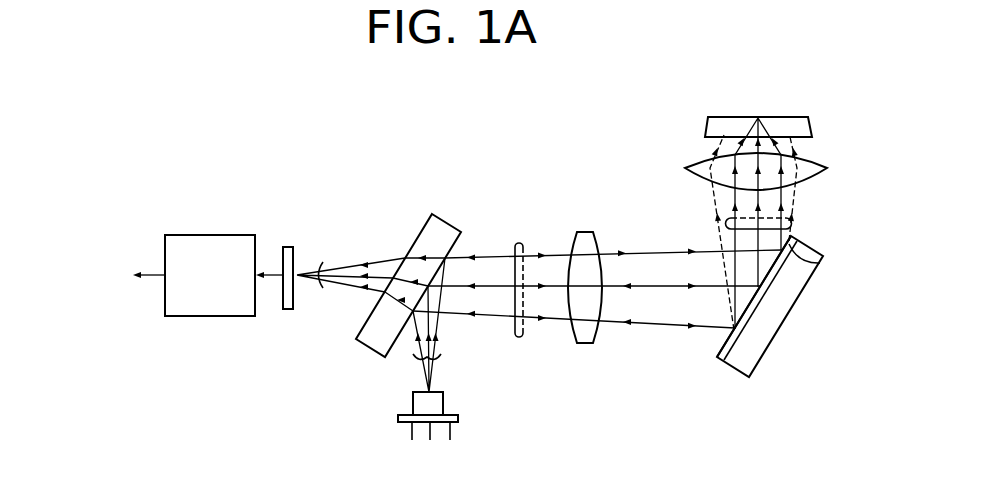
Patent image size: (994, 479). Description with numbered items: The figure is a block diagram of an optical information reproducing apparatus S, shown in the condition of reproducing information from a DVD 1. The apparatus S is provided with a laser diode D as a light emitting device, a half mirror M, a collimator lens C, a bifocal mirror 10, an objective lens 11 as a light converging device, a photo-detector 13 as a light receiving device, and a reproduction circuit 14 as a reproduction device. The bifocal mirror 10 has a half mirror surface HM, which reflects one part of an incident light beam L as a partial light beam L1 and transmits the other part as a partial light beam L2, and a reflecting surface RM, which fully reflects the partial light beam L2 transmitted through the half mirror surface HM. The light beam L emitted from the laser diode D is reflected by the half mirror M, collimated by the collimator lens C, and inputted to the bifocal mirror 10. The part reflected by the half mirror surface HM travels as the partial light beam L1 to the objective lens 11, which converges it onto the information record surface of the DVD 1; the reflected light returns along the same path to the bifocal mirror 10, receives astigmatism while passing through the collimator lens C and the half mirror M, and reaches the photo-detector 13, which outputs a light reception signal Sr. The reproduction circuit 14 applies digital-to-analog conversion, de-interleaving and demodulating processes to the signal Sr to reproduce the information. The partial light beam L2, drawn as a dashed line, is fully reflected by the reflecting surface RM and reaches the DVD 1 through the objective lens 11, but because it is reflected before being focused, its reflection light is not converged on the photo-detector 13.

The DVD 1 is at (779, 116).
The bifocal mirror 10 is at (771, 343).
The objective lens 11 is at (828, 169).
The photo-detector 13 is at (288, 310).
The reproduction circuit 14 is at (215, 317).
The optical information reproducing apparatus S is at (453, 147).
The half mirror M is at (432, 213).
The collimator lens C is at (580, 231).
The laser diode D is at (458, 418).
The light beam L is at (515, 337).
The partial light beam L1 is at (321, 288).
The partial light beam L2 is at (806, 197).
The half mirror surface HM is at (714, 351).
The reflecting surface RM is at (822, 262).
The light reception signal Sr is at (276, 280).